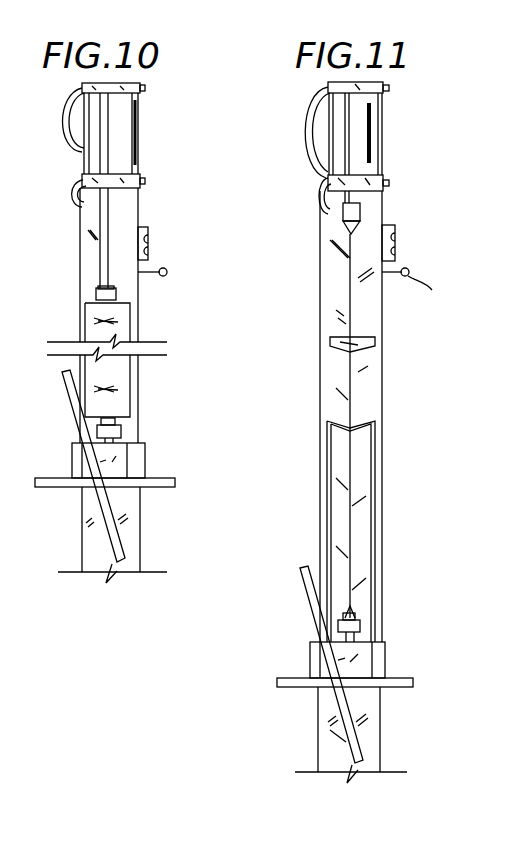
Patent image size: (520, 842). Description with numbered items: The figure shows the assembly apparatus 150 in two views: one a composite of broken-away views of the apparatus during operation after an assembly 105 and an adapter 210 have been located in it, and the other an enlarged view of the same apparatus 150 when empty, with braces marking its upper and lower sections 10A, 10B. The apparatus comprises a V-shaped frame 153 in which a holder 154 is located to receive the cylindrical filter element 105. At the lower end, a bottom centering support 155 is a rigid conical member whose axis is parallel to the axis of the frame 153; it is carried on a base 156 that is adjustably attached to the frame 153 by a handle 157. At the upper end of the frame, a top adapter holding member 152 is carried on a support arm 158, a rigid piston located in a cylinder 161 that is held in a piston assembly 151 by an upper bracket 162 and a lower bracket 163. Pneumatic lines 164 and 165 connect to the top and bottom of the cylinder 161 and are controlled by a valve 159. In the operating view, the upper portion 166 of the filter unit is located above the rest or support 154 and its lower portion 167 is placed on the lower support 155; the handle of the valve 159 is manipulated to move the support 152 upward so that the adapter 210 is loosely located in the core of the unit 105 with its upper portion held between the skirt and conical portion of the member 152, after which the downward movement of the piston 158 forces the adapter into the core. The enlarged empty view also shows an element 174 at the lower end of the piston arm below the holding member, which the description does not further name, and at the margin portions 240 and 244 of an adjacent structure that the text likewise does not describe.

In FIG. 11, the upper unit of the apparatus 10A is at (262, 72).
In FIG. 11, the lower unit of the apparatus 10B is at (273, 610).
In FIG. 10, the filter assembly 105 is at (197, 313).
In FIG. 11, the assembly apparatus 150 is at (455, 803).
In FIG. 11, the piston assembly 151 is at (408, 77).
In FIG. 10, the top adapter holding member 152 is at (107, 297).
In FIG. 11, the top adapter holding member 152 is at (378, 230).
In FIG. 11, the V-shaped frame 153 is at (380, 390).
In FIG. 11, the holder 154 is at (330, 503).
In FIG. 10, the bottom centering support 155 is at (110, 432).
In FIG. 11, the bottom centering support 155 is at (350, 628).
In FIG. 10, the base 156 is at (140, 465).
In FIG. 11, the base 156 is at (378, 670).
In FIG. 10, the handle 157 is at (100, 510).
In FIG. 11, the handle 157 is at (355, 752).
In FIG. 10, the support arm 158 is at (124, 244).
In FIG. 11, the support arm 158 is at (350, 197).
In FIG. 11, the valve 159 is at (407, 289).
In FIG. 10, the cylinder 161 is at (117, 130).
In FIG. 11, the cylinder 161 is at (338, 115).
In FIG. 11, the upper bracket 162 is at (320, 89).
In FIG. 11, the lower bracket 163 is at (330, 176).
In FIG. 10, the pneumatic line 164 is at (64, 123).
In FIG. 10, the pneumatic line 165 is at (75, 188).
In FIG. 10, the upper portion of filter unit 166 is at (125, 325).
In FIG. 10, the lower portion of filter unit 167 is at (120, 378).
In FIG. 11, the nozzle 174 is at (343, 224).
In FIG. 10, the adapter 210 is at (97, 302).
In FIG. 10, the assembly 240 is at (47, 657).
In FIG. 10, the member 244 is at (0, 696).